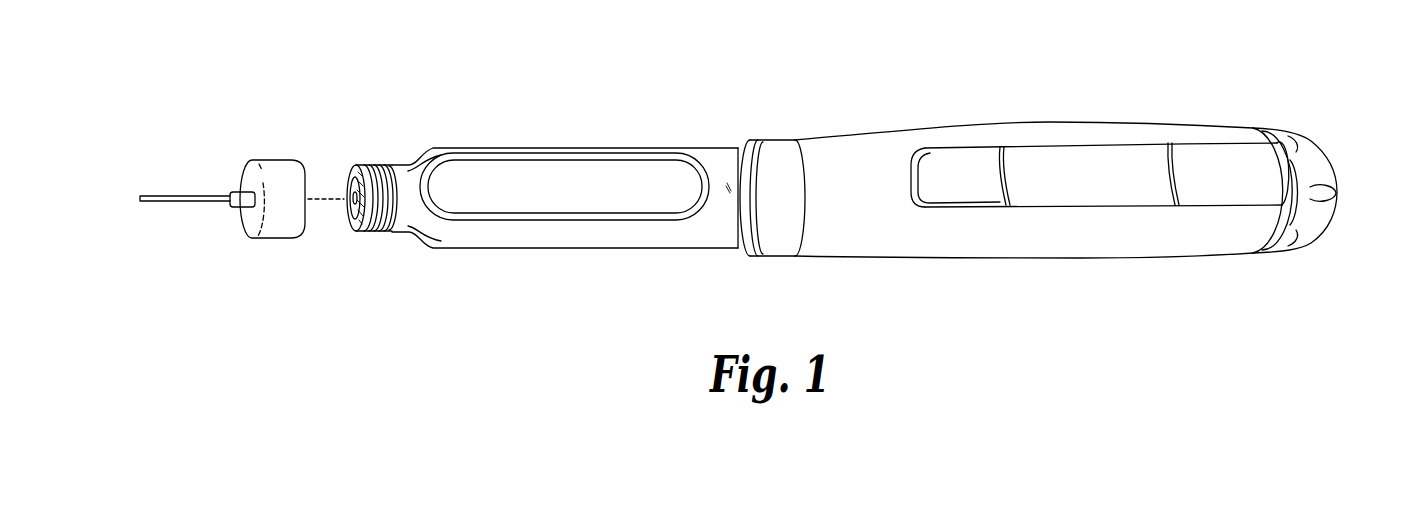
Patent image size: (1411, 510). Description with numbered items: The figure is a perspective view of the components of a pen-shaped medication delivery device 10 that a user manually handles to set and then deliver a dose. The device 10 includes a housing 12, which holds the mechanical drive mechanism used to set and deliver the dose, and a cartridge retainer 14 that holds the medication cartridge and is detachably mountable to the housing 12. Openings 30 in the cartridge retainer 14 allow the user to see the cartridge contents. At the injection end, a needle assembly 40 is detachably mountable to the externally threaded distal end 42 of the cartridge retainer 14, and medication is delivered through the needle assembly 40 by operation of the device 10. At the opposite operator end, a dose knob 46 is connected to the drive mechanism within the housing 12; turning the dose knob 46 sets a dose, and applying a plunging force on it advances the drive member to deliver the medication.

The medication delivery device 10 is at (867, 97).
The housing 12 is at (958, 135).
The cartridge retainer 14 is at (568, 131).
The openings 30 is at (494, 172).
The needle assembly 40 is at (233, 143).
The externally threaded distal end 42 is at (369, 166).
The dose knob 46 is at (1321, 164).